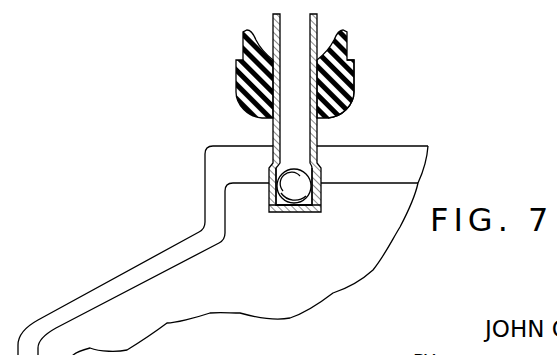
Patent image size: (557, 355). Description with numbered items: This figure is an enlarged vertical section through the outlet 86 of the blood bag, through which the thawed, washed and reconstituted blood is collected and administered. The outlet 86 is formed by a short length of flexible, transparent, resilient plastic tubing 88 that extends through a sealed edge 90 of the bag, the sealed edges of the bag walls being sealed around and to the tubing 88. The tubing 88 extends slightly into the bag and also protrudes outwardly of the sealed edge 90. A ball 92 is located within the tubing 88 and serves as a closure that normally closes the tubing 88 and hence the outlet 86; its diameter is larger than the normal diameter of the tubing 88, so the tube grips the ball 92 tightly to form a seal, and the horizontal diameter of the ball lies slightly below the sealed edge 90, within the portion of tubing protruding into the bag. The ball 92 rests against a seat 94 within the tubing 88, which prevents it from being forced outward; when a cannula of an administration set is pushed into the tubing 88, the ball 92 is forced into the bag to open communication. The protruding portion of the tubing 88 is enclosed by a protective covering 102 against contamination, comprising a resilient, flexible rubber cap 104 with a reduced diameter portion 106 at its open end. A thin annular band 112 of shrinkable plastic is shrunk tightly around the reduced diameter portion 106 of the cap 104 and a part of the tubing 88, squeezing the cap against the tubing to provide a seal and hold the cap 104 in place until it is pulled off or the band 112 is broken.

The outlet 86 is at (283, 213).
The tubing 88 is at (271, 166).
The sealed edge 90 is at (213, 158).
The ball 92 is at (300, 213).
The seat 94 is at (306, 161).
The protective covering 102 is at (352, 45).
The rubber cap 104 is at (355, 95).
The reduced diameter portion 106 is at (340, 115).
The band 112 is at (243, 82).